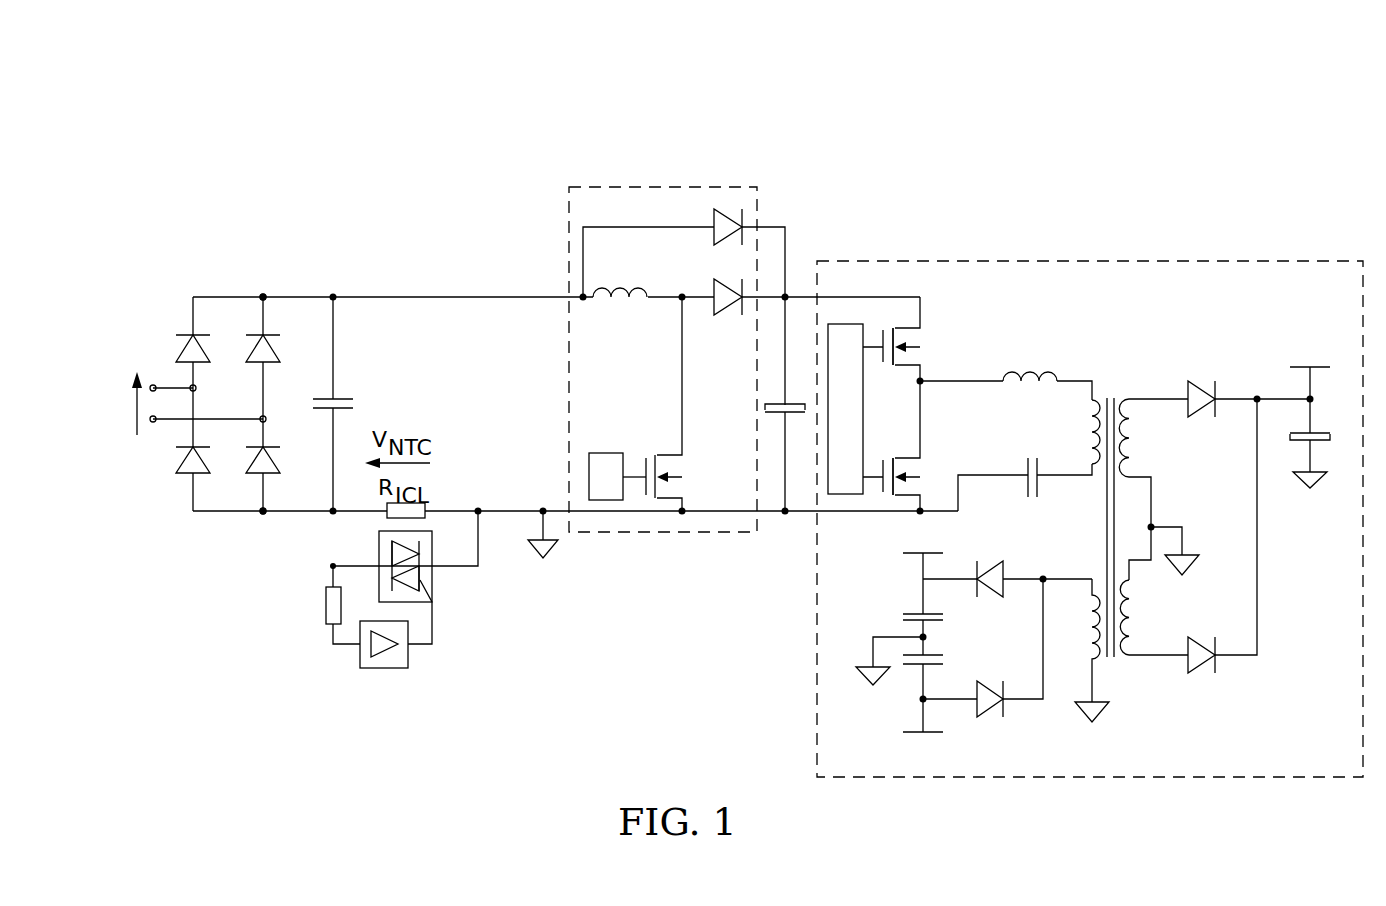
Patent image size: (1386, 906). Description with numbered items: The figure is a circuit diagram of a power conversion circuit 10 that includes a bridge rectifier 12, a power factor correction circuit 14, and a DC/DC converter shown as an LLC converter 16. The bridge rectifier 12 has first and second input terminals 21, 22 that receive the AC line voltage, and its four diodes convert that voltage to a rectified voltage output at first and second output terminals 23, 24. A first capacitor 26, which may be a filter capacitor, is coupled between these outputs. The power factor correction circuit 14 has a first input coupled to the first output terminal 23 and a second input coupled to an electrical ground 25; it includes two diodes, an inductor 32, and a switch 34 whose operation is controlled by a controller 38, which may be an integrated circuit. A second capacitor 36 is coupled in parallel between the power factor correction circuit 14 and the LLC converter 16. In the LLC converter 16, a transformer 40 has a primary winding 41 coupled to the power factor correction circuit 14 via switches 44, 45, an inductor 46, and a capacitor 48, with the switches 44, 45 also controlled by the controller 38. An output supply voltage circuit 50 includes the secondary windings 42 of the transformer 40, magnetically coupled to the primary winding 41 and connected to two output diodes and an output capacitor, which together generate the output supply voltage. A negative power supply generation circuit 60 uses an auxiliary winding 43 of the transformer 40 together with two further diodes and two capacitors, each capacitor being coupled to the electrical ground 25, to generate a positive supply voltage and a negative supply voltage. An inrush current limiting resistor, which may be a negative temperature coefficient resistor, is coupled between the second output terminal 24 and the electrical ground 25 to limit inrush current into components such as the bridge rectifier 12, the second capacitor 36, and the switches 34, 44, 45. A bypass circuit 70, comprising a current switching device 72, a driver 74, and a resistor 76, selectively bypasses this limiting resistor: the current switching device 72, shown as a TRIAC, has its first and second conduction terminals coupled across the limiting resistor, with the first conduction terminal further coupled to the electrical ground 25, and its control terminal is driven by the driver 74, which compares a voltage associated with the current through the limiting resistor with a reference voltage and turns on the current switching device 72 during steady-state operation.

The power conversion circuit 10 is at (1243, 100).
The bridge rectifier 12 is at (146, 270).
The power factor correction circuit 14 is at (693, 187).
The LLC converter 16 is at (1268, 261).
The first input terminal 21 is at (150, 387).
The second input terminal 22 is at (151, 422).
The first output terminal 23 is at (264, 296).
The second output terminal 24 is at (264, 514).
The electrical ground 25 is at (548, 557).
The first capacitor 26 is at (340, 399).
The inductor 32 is at (625, 315).
The switch 34 is at (692, 462).
The second capacitor 36 is at (774, 414).
The controller 38 is at (606, 453).
The transformer 40 is at (1113, 388).
The primary winding 41 is at (1072, 421).
The secondary windings 42 is at (1143, 452).
The auxiliary winding 43 is at (1085, 630).
The switch 44 is at (928, 340).
The switch 45 is at (928, 463).
The inductor 46 is at (1034, 375).
The capacitor 48 is at (1027, 476).
The output supply voltage circuit 50 is at (1302, 609).
The negative power supply generation circuit 60 is at (1050, 730).
The bypass circuit 70 is at (487, 729).
The current switching device 72 is at (432, 586).
The driver 74 is at (383, 669).
The resistor 76 is at (326, 610).